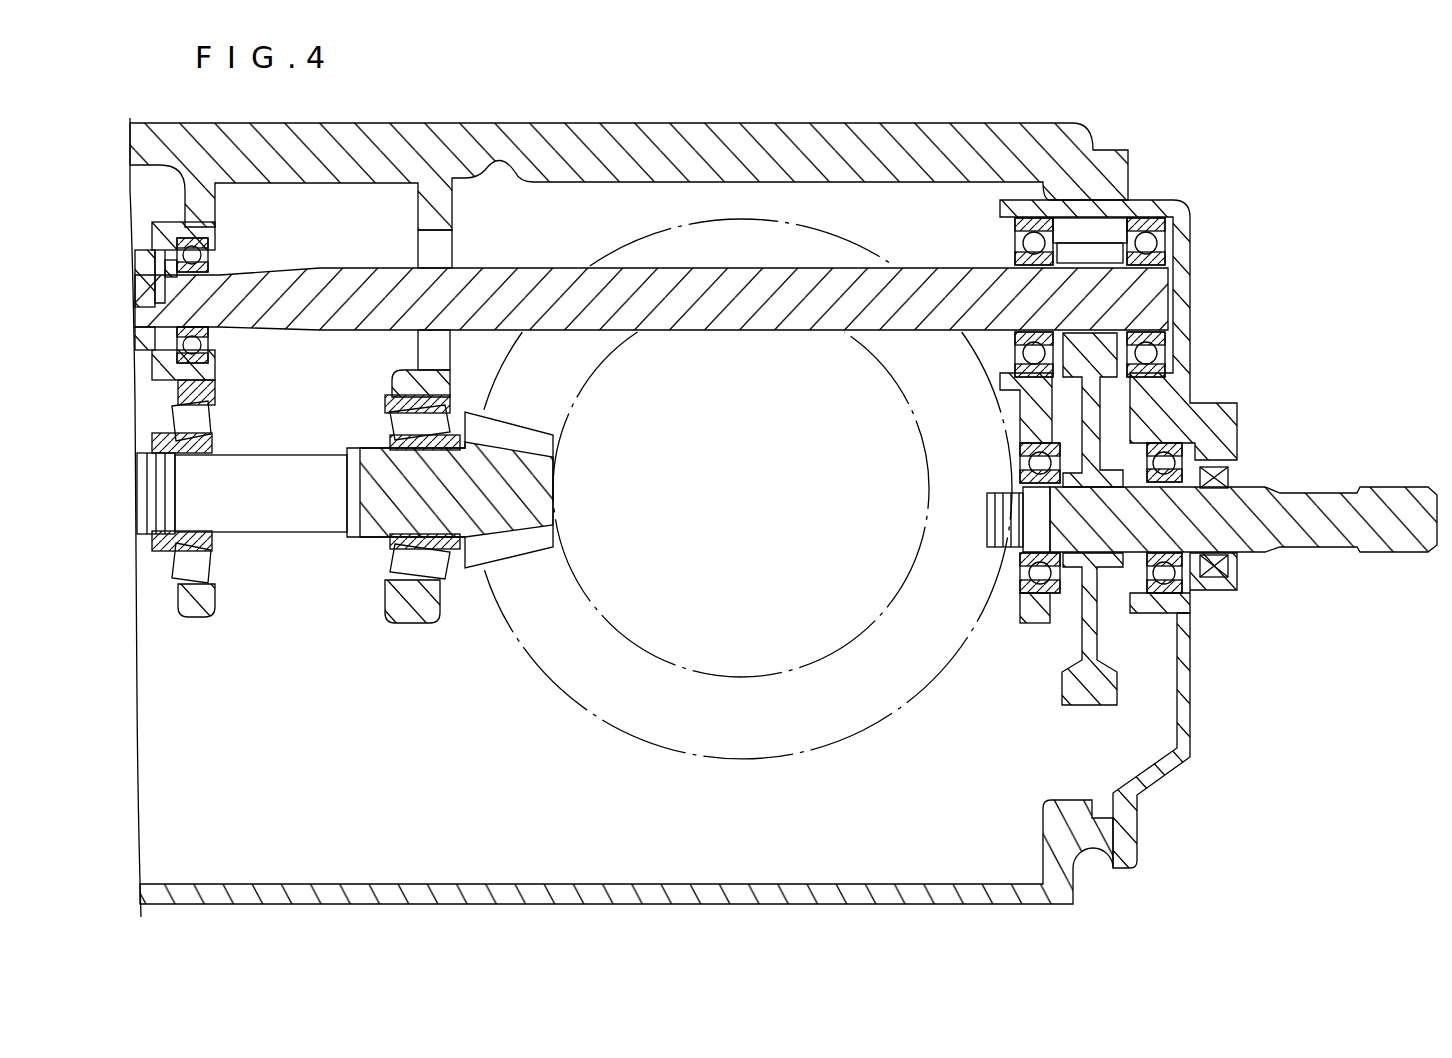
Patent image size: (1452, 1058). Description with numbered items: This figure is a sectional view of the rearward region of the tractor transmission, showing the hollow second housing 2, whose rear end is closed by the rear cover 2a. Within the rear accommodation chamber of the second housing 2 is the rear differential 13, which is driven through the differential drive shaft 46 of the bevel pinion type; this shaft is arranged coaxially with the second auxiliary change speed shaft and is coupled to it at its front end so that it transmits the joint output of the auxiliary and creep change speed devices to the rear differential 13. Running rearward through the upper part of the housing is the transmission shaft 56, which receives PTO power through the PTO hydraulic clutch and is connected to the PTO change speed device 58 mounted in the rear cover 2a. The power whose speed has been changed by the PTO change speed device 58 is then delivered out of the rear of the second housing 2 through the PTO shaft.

The second housing 2 is at (1184, 848).
The rear cover 2a is at (1172, 205).
The rear differential 13 is at (540, 690).
The differential drive shaft 46 is at (309, 527).
The transmission shaft 56 is at (924, 282).
The PTO change speed device 58 is at (1102, 230).